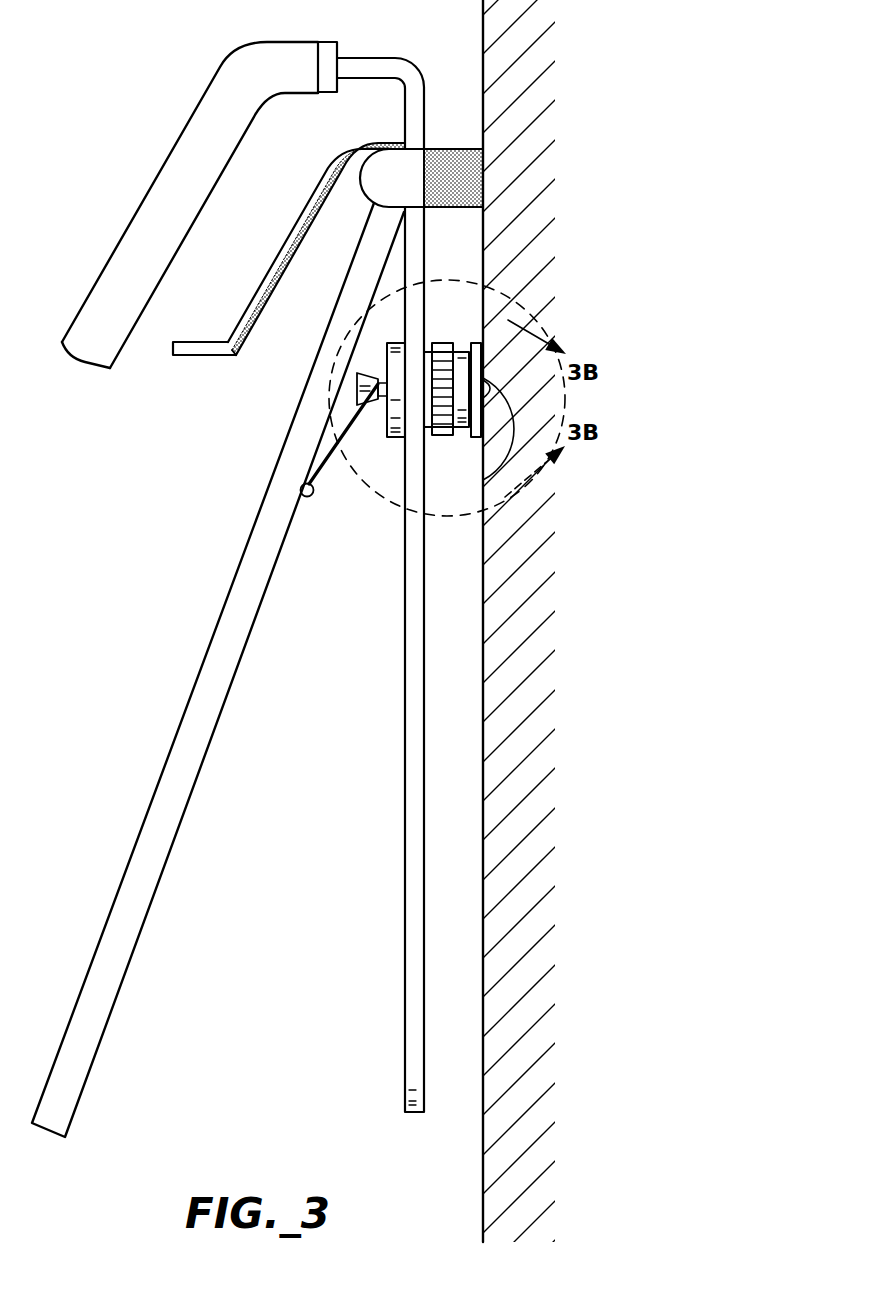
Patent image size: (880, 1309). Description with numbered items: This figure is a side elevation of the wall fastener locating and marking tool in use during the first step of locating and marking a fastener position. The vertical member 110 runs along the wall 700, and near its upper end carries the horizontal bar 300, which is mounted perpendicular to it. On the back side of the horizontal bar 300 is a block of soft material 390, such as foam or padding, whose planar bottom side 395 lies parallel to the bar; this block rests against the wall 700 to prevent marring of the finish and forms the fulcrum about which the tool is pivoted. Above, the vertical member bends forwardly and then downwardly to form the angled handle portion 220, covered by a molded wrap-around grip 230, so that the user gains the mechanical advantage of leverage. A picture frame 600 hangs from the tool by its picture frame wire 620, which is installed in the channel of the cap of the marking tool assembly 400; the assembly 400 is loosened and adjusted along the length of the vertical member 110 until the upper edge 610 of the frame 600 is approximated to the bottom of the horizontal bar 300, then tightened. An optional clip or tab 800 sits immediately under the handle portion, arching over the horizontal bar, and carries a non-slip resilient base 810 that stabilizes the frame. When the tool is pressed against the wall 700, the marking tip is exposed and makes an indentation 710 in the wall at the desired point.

The vertical member 110 is at (407, 858).
The handle portion 220 is at (140, 210).
The grip 230 is at (326, 45).
The horizontal bar 300 is at (367, 170).
The block of soft material 390 is at (467, 147).
The bottom side of the soft material 395 is at (457, 214).
The marking tool assembly 400 is at (391, 472).
The picture frame 600 is at (194, 782).
The upper edge 610 is at (397, 197).
The picture frame wire 620 is at (318, 455).
The wall 700 is at (492, 1125).
The indentation 710 is at (483, 480).
The clip or tab 800 is at (242, 316).
The non-slip resilient base 810 is at (246, 346).